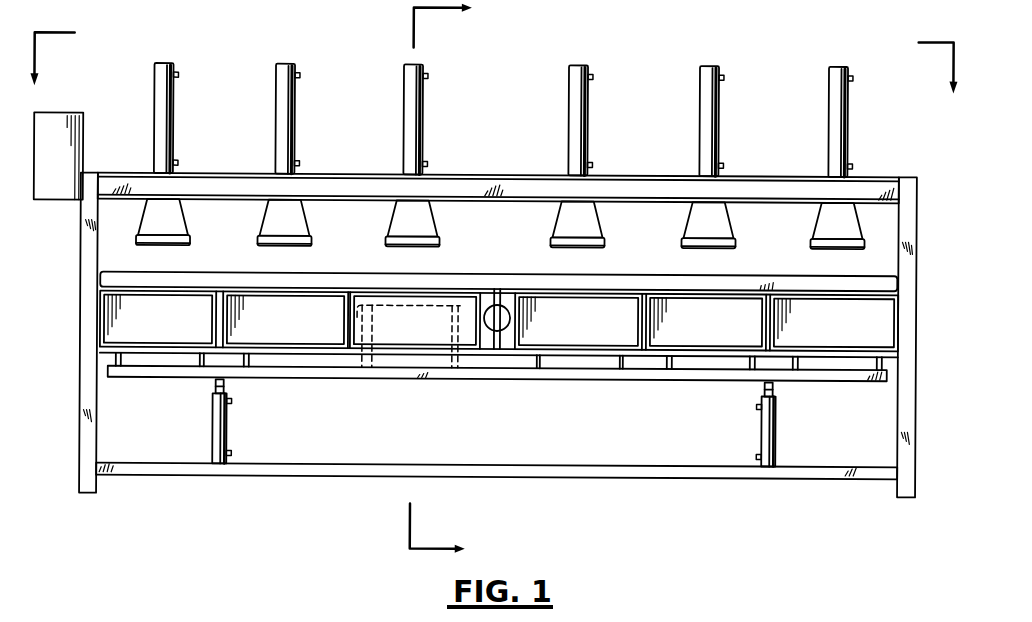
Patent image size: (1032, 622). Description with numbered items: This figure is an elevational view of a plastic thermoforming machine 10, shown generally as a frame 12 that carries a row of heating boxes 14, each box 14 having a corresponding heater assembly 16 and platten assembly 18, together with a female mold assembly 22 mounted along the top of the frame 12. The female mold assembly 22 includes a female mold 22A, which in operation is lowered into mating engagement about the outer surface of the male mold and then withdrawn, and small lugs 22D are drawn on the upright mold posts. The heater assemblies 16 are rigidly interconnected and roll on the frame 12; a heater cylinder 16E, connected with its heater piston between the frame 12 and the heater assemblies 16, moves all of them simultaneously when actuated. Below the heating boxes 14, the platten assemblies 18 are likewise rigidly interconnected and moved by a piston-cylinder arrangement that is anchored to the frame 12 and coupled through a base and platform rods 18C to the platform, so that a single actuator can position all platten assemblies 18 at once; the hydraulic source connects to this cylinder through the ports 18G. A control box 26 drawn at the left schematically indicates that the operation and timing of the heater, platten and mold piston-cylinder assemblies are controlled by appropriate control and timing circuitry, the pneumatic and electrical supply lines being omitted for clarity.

The plastic thermoforming machine 10 is at (218, 505).
The frame 12 is at (767, 175).
The heating box 14 is at (499, 331).
The heater assembly 16 is at (790, 276).
The heater cylinder 16E is at (503, 305).
The platten assembly 18 is at (247, 403).
The platform rods 18C is at (118, 359).
The ports 18G is at (232, 404).
The female mold assembly 22 is at (175, 114).
The female mold 22A is at (177, 220).
The post lugs 22D is at (177, 75).
The control box 26 is at (57, 202).